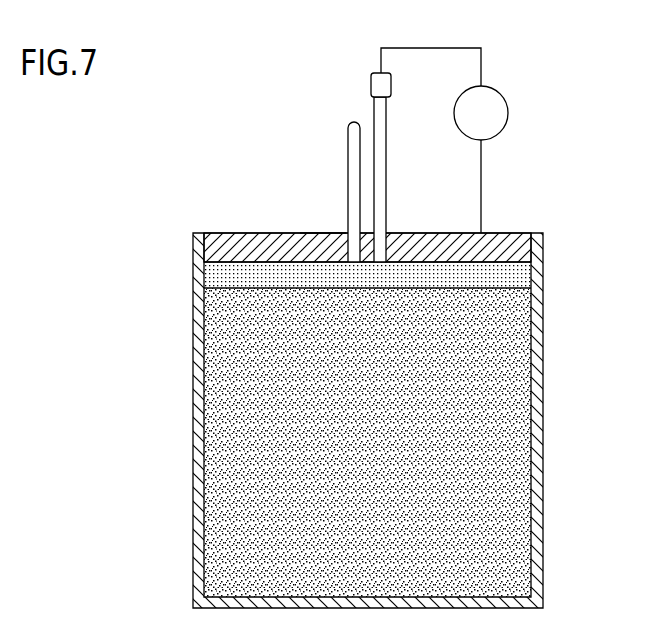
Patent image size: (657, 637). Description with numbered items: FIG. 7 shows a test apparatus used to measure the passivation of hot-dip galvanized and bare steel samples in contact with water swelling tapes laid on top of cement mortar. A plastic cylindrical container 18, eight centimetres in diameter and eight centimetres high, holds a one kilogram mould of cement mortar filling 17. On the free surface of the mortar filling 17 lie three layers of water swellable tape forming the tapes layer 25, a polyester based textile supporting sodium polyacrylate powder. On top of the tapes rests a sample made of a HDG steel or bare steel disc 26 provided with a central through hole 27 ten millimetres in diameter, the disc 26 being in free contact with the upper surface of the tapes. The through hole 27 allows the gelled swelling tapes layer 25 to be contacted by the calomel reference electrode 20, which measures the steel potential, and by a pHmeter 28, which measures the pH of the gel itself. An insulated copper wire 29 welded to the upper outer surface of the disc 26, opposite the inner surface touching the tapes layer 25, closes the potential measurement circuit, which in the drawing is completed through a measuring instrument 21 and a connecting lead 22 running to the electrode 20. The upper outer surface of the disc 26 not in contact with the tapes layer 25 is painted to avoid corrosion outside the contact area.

The cement mortar filling 17 is at (376, 452).
The plastic cylindrical container 18 is at (545, 470).
The calomel reference electrode 20 is at (375, 102).
The measuring device 21 is at (493, 127).
The electrical lead 22 is at (453, 48).
The water swellable tapes layer 25 is at (526, 276).
The steel disc 26 is at (512, 233).
The central through hole 27 is at (344, 233).
The pHmeter 28 is at (347, 140).
The insulated copper wire 29 is at (482, 170).